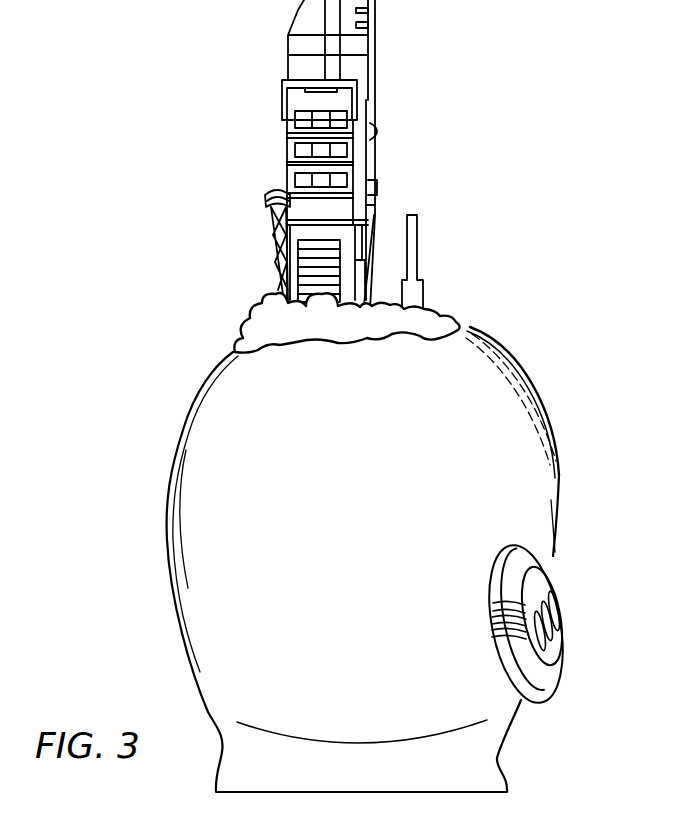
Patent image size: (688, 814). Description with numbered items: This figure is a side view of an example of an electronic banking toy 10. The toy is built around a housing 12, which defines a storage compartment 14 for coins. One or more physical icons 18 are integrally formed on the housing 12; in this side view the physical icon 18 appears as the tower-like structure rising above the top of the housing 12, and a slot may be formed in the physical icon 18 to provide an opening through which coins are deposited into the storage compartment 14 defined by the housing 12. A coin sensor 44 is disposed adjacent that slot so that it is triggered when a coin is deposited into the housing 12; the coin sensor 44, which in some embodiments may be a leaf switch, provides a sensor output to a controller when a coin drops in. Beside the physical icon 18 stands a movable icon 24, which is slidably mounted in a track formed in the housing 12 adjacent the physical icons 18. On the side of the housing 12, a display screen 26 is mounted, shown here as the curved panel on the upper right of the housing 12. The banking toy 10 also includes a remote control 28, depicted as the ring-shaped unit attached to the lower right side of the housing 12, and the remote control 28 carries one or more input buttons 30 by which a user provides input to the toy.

The electronic banking toy 10 is at (212, 56).
The housing 12 is at (200, 415).
The storage compartment 14 is at (206, 478).
The physical icon 18 is at (355, 70).
The coin sensor 44 is at (328, 33).
The movable icon 24 is at (416, 238).
The display screen 26 is at (528, 382).
The remote control 28 is at (540, 558).
The input buttons 30 is at (558, 630).